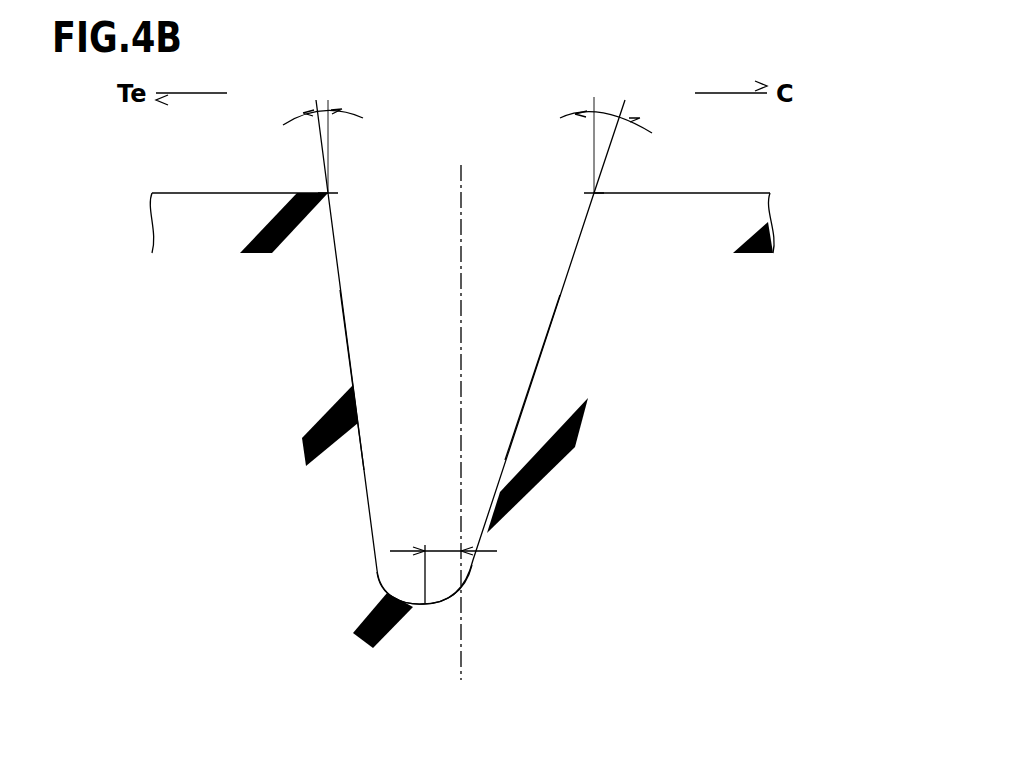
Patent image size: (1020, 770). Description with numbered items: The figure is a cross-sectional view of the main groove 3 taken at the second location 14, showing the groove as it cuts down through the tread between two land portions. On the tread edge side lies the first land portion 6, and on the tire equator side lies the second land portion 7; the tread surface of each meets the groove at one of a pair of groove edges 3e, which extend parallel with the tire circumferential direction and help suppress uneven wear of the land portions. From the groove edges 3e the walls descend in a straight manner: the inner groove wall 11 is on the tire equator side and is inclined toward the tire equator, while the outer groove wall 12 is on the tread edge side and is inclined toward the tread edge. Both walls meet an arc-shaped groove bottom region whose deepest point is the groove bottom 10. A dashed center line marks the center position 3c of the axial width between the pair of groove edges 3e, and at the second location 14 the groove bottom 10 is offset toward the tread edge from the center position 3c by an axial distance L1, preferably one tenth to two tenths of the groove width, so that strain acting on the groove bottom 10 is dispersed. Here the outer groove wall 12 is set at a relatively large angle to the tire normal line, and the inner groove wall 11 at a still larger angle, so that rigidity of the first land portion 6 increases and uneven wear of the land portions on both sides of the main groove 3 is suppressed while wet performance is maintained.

The main groove 3 is at (518, 254).
The groove edge 3e is at (328, 193).
The center position 3c is at (463, 406).
The first land portion 6 is at (189, 226).
The second land portion 7 is at (733, 226).
The groove bottom 10 is at (417, 604).
The inner groove wall 11 is at (548, 332).
The outer groove wall 12 is at (346, 322).
The second location 14 is at (734, 566).
The axial distance L1 is at (443, 550).